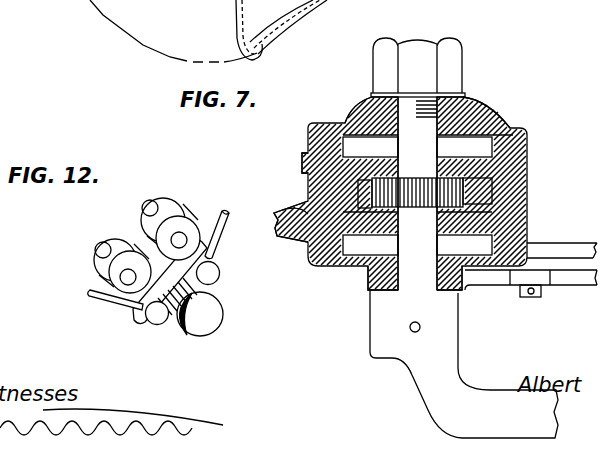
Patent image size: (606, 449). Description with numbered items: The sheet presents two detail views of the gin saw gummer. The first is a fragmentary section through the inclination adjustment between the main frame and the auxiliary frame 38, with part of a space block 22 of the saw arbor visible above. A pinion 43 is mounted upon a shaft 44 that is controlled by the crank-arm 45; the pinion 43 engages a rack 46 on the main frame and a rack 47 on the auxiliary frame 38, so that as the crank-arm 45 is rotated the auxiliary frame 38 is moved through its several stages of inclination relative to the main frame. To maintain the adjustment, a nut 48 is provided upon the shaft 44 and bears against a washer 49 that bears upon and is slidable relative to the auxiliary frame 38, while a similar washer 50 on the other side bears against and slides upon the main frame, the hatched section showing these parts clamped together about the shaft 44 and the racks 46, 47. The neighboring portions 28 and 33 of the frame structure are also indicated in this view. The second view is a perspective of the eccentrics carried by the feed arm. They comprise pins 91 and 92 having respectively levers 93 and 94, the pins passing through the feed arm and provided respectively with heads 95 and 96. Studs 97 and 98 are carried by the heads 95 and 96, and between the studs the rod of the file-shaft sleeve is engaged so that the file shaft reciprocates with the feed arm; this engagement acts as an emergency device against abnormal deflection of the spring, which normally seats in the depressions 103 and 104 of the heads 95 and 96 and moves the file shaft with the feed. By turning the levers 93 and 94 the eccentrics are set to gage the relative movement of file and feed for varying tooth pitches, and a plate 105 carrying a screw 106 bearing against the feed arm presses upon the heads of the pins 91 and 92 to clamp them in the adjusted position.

In FIG. 7, the space block 22 is at (208, 31).
In FIG. 7, the arm 28 is at (298, 240).
In FIG. 7, the plate 33 is at (552, 243).
In FIG. 7, the auxiliary frame 38 is at (520, 157).
In FIG. 7, the pinion 43 is at (348, 172).
In FIG. 7, the shaft 44 is at (427, 118).
In FIG. 7, the crank-arm 45 is at (545, 418).
In FIG. 7, the rack 46 is at (356, 196).
In FIG. 7, the rack 47 is at (527, 197).
In FIG. 7, the nut 48 is at (456, 40).
In FIG. 7, the washer 49 is at (342, 127).
In FIG. 7, the washer 50 is at (362, 265).
In FIG. 12, the pin 91 is at (160, 323).
In FIG. 12, the pin 92 is at (214, 275).
In FIG. 12, the lever 93 is at (103, 300).
In FIG. 12, the lever 94 is at (218, 227).
In FIG. 12, the head 95 is at (123, 240).
In FIG. 12, the head 96 is at (142, 228).
In FIG. 12, the stud 97 is at (97, 247).
In FIG. 12, the stud 98 is at (152, 203).
In FIG. 12, the depression 103 is at (93, 273).
In FIG. 12, the depression 104 is at (168, 213).
In FIG. 12, the plate 105 is at (134, 318).
In FIG. 12, the screw 106 is at (205, 328).